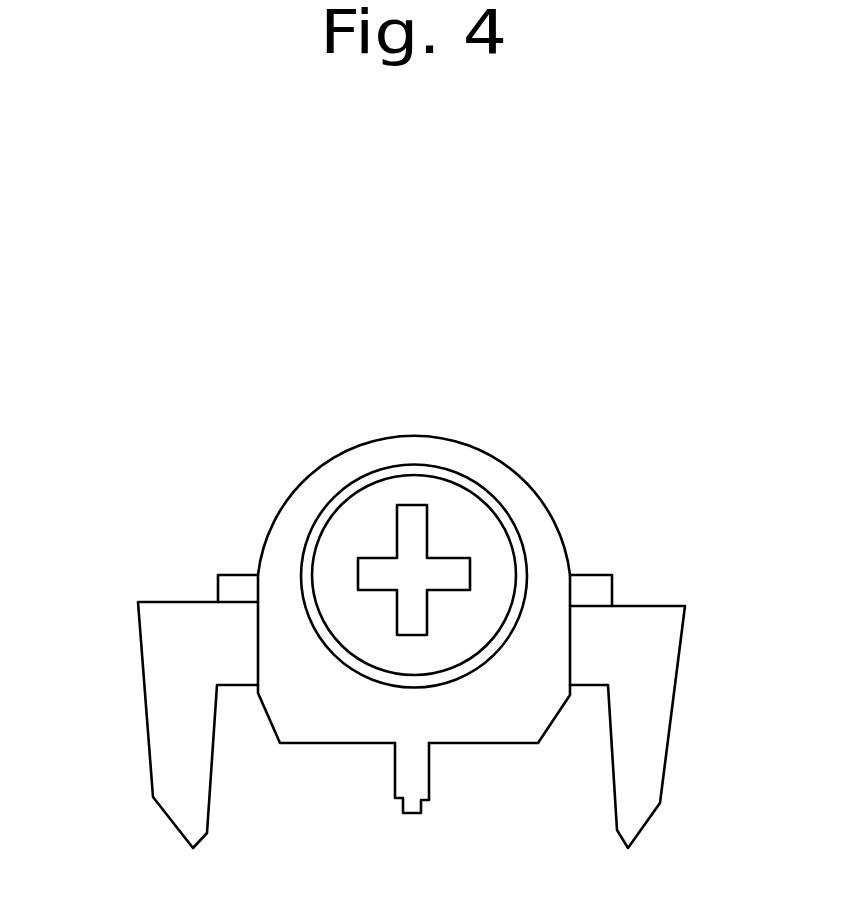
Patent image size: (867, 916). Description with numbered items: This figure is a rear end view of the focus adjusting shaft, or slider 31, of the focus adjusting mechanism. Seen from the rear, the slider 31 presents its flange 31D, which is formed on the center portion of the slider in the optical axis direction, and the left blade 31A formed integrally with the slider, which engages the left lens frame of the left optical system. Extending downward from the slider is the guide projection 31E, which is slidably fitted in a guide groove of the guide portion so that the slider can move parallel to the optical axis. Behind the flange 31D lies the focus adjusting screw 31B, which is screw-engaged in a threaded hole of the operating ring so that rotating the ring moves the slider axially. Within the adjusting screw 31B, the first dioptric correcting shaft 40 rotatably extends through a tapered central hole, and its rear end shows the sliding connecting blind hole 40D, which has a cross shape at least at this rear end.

The focus adjusting shaft 31 is at (365, 518).
The left blade 31A is at (157, 760).
The focus adjusting screw 31B is at (488, 488).
The flange 31D is at (347, 457).
The guide projection 31E is at (427, 775).
The first dioptric correcting shaft 40 is at (489, 501).
The sliding connecting blind hole 40D is at (400, 538).